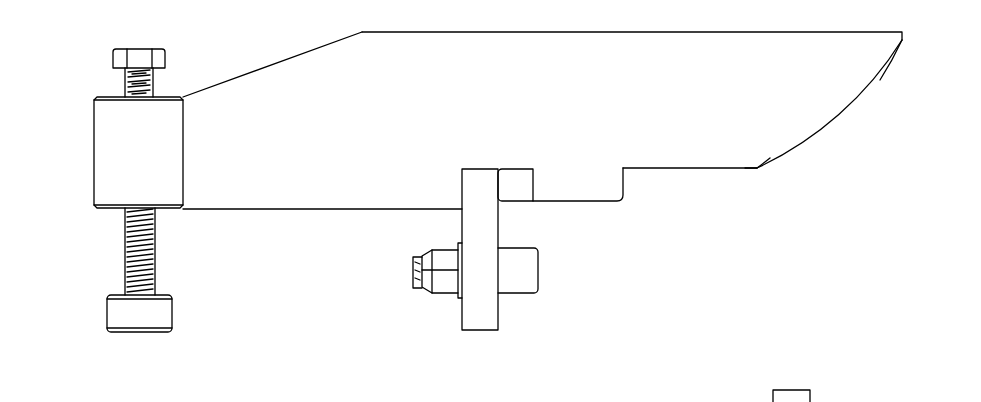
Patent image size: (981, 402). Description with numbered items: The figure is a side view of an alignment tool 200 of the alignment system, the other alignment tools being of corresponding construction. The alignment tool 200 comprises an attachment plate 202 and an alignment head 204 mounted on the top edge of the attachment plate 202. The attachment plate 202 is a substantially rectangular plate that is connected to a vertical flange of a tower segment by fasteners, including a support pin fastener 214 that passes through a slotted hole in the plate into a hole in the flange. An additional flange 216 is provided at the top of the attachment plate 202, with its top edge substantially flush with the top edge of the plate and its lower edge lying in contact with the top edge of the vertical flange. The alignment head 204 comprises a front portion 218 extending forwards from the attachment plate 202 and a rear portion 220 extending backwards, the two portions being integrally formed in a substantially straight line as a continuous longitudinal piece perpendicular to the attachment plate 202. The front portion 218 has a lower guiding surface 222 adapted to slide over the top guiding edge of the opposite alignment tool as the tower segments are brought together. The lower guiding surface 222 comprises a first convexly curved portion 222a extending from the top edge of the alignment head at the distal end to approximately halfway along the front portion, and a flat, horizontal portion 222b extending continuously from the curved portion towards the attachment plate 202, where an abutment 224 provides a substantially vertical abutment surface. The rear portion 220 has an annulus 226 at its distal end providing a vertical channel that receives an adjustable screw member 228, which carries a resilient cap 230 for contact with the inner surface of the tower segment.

The alignment tool 200 is at (499, 213).
The attachment plate 202 is at (454, 322).
The alignment head 204 is at (571, 142).
The support pin fastener 214 is at (531, 270).
The additional flange 216 is at (517, 178).
The front portion 218 is at (756, 148).
The rear portion 220 is at (280, 77).
The lower guiding surface 222 is at (813, 129).
The first convexly curved portion 222a is at (892, 62).
The flat, horizontal portion 222b is at (680, 170).
The abutment 224 is at (622, 180).
The annulus 226 is at (100, 138).
The adjustable screw member 228 is at (128, 259).
The resilient cap 230 is at (113, 316).